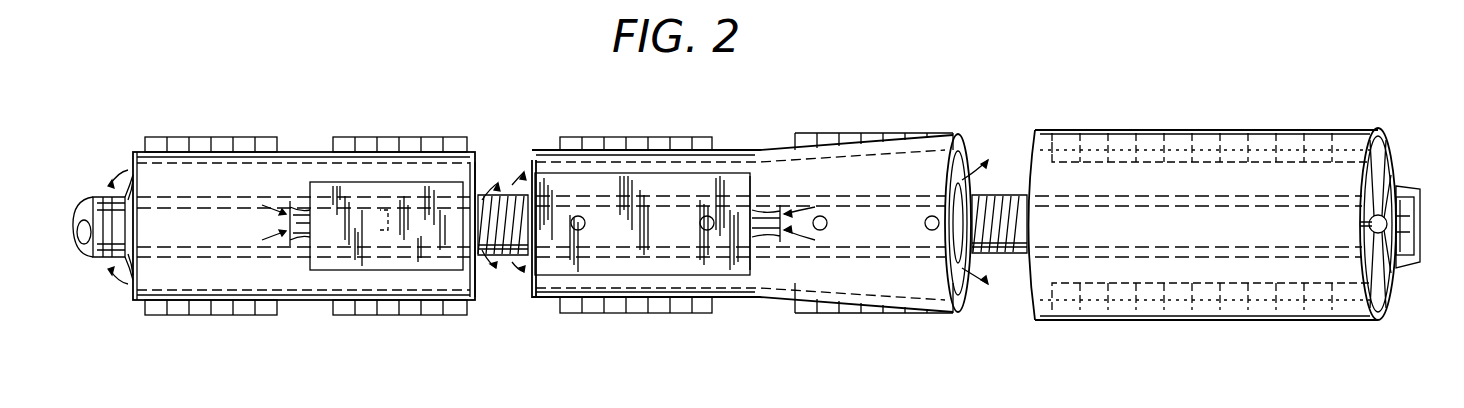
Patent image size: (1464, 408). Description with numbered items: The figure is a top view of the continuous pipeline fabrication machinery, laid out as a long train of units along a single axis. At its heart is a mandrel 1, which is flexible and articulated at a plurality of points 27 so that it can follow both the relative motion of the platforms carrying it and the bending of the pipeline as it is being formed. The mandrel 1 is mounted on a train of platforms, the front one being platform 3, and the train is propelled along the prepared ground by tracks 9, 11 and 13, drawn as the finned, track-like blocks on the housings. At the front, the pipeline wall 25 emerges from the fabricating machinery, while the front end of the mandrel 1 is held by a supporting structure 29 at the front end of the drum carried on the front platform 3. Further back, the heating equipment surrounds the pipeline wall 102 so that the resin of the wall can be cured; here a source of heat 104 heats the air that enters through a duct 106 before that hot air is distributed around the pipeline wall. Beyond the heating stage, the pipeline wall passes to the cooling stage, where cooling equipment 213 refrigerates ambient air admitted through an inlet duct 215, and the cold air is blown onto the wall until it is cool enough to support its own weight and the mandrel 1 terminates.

The mandrel 1 is at (100, 227).
The platform 3 is at (1412, 268).
The track 9 is at (1186, 128).
The track 11 is at (876, 132).
The track 13 is at (231, 146).
The pipeline wall 25 is at (94, 192).
The articulation points 27 is at (586, 226).
The supporting structure 29 is at (1393, 170).
The pipeline wall 102 is at (1004, 192).
The source of heat 104 is at (733, 268).
The duct 106 is at (762, 210).
The cooling equipment 213 is at (436, 185).
The inlet duct 215 is at (300, 210).